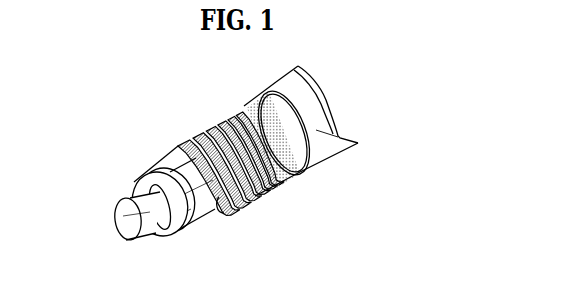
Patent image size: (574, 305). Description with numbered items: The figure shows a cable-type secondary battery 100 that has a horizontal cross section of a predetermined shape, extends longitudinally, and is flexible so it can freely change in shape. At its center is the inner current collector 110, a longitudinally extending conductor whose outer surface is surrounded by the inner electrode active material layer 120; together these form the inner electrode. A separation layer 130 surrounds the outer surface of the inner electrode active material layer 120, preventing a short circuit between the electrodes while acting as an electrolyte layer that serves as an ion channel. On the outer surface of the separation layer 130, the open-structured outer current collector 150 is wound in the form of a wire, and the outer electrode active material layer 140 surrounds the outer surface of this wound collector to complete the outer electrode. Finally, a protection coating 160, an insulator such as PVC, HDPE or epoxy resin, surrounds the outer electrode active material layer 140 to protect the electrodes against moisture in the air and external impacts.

The cable-type secondary battery 100 is at (166, 119).
The inner current collector 110 is at (149, 234).
The inner electrode active material layer 120 is at (178, 231).
The separation layer 130 is at (200, 219).
The outer electrode active material layer 140 is at (288, 171).
The open-structured outer current collector 150 is at (232, 210).
The protection coating 160 is at (317, 155).